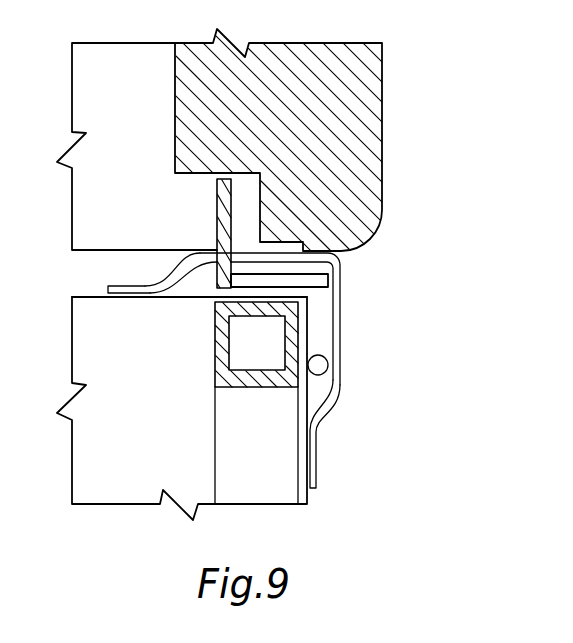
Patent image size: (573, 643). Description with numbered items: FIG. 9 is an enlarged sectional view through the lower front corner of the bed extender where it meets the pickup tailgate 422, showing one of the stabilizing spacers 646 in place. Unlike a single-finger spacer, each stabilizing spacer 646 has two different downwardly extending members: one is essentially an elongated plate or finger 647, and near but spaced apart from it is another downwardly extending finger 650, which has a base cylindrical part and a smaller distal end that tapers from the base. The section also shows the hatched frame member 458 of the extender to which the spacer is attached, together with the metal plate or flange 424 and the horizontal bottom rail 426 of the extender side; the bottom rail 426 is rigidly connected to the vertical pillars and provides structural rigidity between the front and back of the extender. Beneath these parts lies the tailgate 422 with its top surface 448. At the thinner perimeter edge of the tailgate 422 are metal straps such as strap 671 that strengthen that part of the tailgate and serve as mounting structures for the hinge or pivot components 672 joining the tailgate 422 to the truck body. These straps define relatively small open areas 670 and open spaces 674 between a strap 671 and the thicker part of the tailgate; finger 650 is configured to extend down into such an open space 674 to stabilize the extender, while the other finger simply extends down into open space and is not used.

The frame member 458 is at (364, 107).
The finger 647 is at (257, 277).
The stabilizing spacer 646 is at (256, 352).
The open area 670 is at (188, 286).
The strap 671 is at (178, 268).
The pivot component 672 is at (322, 297).
The open space 674 is at (315, 397).
The finger 650 is at (326, 364).
The top surface 448 is at (88, 293).
The tailgate 422 is at (87, 347).
The metal plate or flange 424 is at (218, 279).
The horizontal bottom rail 426 is at (230, 447).